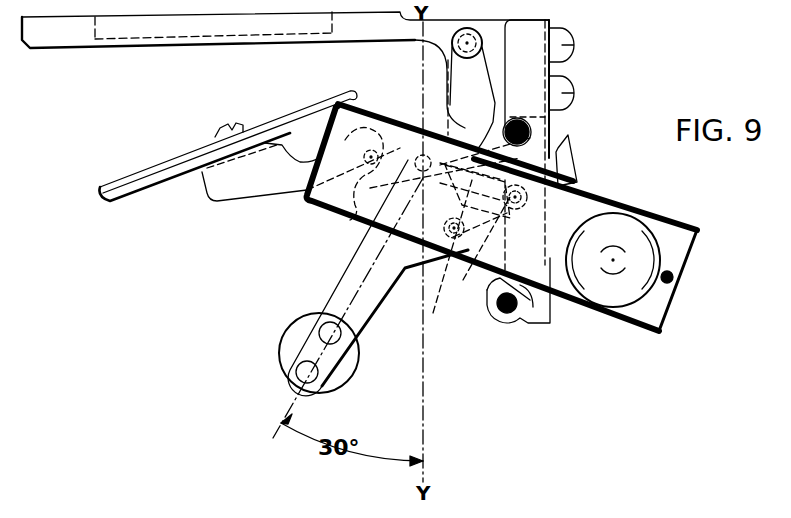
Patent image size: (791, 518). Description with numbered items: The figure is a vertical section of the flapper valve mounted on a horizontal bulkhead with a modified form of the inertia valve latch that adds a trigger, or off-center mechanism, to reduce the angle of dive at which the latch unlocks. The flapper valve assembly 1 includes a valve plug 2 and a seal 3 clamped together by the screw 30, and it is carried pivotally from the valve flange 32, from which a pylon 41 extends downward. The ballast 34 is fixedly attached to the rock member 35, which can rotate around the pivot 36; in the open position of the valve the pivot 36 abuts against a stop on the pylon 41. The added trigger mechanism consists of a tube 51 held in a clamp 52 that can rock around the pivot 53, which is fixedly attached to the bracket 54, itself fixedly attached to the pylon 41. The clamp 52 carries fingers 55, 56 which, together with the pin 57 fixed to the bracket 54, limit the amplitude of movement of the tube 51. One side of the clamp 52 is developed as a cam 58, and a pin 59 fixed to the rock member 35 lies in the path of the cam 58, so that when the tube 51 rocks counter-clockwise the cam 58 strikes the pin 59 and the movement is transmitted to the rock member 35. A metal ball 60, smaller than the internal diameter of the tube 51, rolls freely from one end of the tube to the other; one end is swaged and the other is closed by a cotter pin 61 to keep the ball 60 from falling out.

The flapper valve assembly 1 is at (204, 192).
The valve plug 2 is at (142, 190).
The seal 3 is at (115, 182).
The screw 30 is at (215, 134).
The valve flange 32 is at (354, 32).
The ballast 34 is at (322, 357).
The rock member 35 is at (347, 273).
The pivot 36 is at (415, 150).
The pylon 41 is at (545, 166).
The tube 51 is at (376, 112).
The clamp 52 is at (536, 322).
The pivot 53 is at (503, 316).
The bracket 54 is at (535, 36).
The finger 55 is at (512, 118).
The finger 56 is at (568, 137).
The pin 57 is at (530, 129).
The cam 58 is at (459, 262).
The pin 59 is at (437, 313).
The metal ball 60 is at (622, 297).
The cotter pin 61 is at (674, 276).